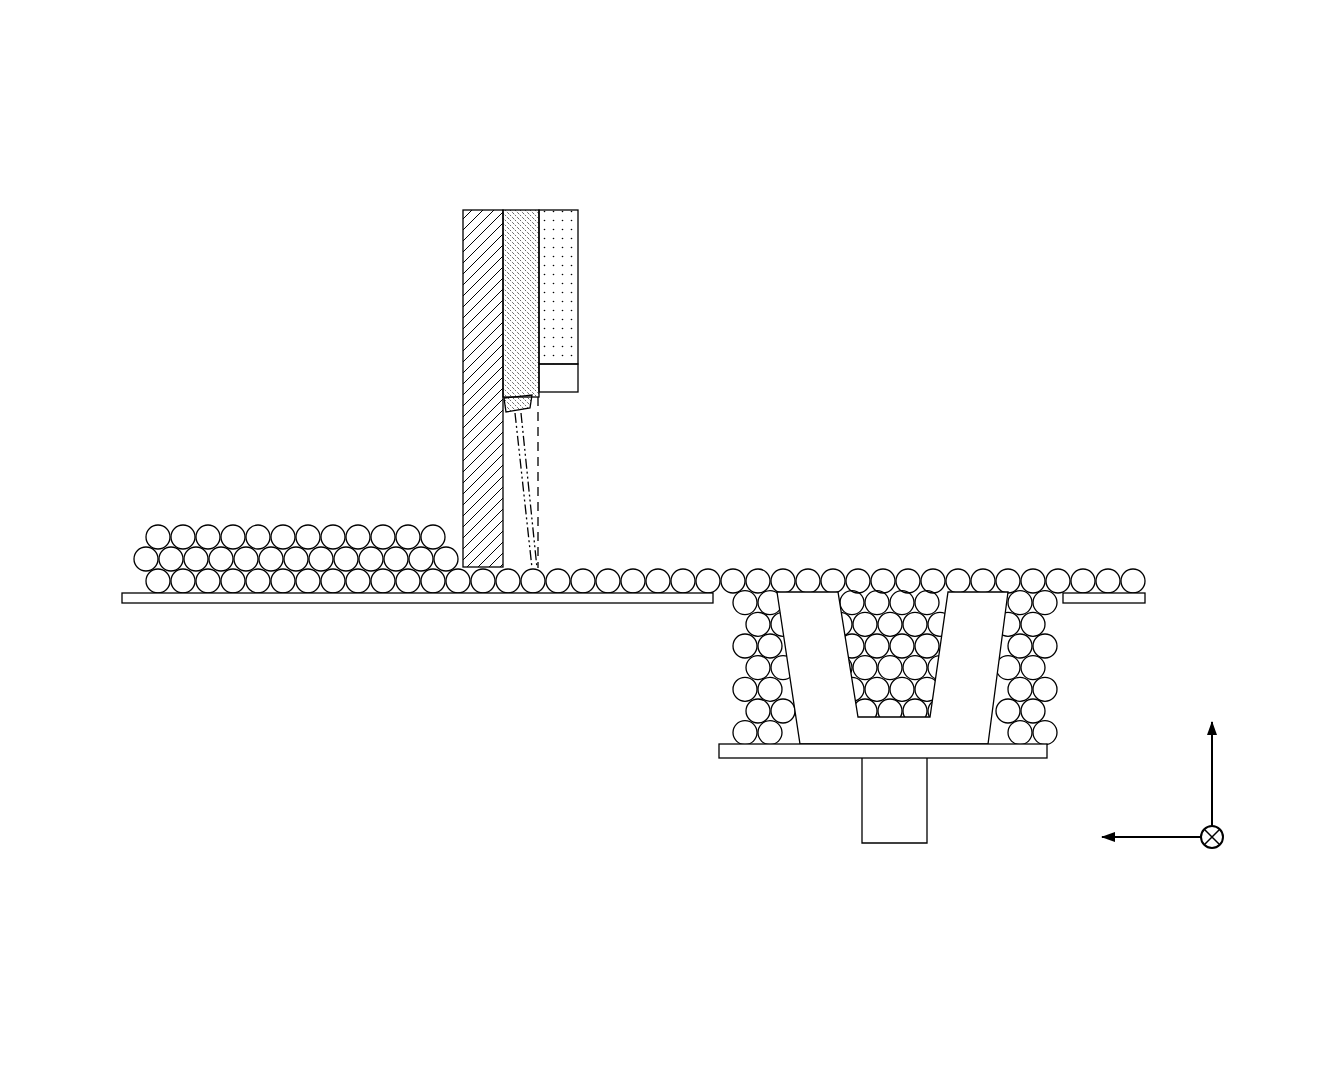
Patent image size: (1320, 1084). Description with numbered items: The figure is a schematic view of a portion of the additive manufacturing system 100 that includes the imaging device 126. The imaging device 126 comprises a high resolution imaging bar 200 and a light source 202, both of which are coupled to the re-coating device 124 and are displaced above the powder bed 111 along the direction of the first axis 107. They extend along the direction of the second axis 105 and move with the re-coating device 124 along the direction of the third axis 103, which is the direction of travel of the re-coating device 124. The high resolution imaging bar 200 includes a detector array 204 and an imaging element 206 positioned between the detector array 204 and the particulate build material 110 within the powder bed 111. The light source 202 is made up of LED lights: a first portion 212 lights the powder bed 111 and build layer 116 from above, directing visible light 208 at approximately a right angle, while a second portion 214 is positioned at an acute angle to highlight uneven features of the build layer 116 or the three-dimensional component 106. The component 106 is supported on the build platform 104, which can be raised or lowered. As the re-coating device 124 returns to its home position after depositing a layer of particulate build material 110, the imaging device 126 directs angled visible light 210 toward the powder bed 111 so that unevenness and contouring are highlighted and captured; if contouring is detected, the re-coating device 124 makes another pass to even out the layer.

The additive manufacturing system 100 is at (650, 127).
The high resolution imaging bar 200 is at (606, 224).
The first portion of the LED lights 212 is at (522, 211).
The imaging device 126 is at (638, 292).
The detector array 204 is at (562, 340).
The imaging element 206 is at (578, 378).
The second portion of the LED lights 214 is at (533, 405).
The light source 202 is at (597, 397).
The visible light 208 is at (541, 470).
The angled visible light 210 is at (552, 522).
The re-coating device 124 is at (475, 352).
The build platform 104 is at (150, 603).
The build layer 116 is at (1155, 580).
The particulate build material 110 is at (933, 578).
The powder bed 111 is at (1072, 528).
The three-dimensional component 106 is at (970, 652).
The third axis 103 is at (1160, 835).
The second axis 105 is at (1227, 835).
The first axis 107 is at (1215, 787).